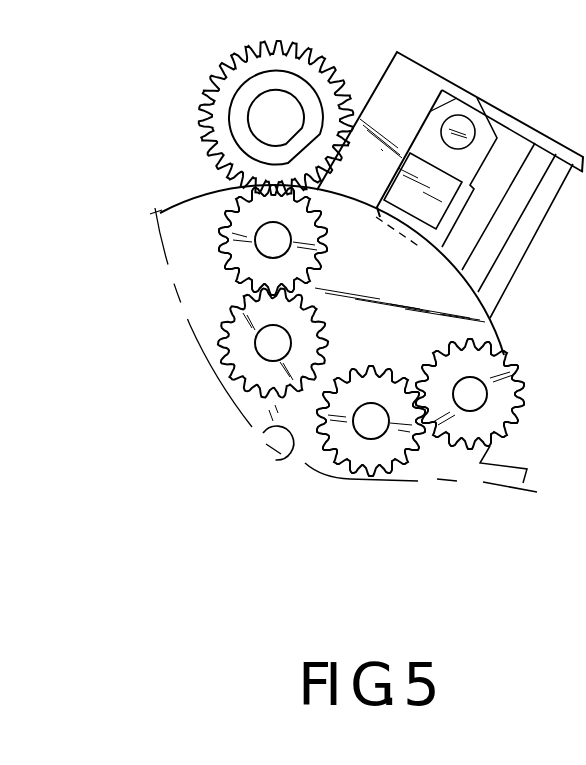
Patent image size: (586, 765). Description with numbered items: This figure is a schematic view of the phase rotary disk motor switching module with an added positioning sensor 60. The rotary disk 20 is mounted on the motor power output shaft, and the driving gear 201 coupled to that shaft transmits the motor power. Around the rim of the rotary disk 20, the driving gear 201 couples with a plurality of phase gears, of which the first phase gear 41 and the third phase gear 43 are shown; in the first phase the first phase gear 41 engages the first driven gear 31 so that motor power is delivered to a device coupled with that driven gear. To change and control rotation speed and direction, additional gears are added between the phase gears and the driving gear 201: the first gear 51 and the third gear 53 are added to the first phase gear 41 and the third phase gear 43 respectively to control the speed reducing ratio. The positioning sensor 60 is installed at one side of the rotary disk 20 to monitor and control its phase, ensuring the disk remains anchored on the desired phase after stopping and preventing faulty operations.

The rotary disk 20 is at (490, 317).
The driving gear 201 is at (262, 421).
The first driven gear 31 is at (223, 92).
The first phase gear 41 is at (223, 232).
The third phase gear 43 is at (498, 397).
The first gear 51 is at (220, 340).
The third gear 53 is at (367, 453).
The positioning sensor 60 is at (462, 160).